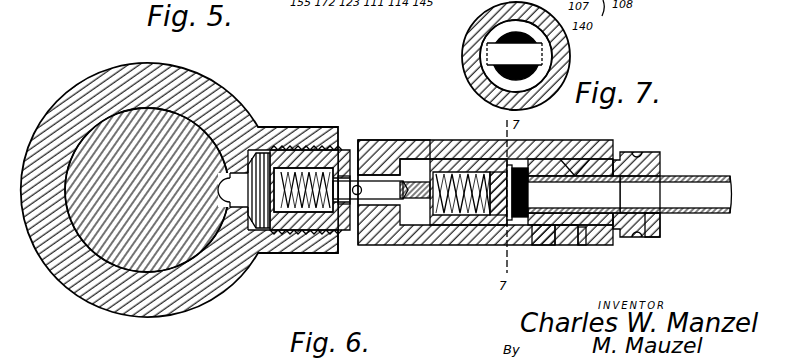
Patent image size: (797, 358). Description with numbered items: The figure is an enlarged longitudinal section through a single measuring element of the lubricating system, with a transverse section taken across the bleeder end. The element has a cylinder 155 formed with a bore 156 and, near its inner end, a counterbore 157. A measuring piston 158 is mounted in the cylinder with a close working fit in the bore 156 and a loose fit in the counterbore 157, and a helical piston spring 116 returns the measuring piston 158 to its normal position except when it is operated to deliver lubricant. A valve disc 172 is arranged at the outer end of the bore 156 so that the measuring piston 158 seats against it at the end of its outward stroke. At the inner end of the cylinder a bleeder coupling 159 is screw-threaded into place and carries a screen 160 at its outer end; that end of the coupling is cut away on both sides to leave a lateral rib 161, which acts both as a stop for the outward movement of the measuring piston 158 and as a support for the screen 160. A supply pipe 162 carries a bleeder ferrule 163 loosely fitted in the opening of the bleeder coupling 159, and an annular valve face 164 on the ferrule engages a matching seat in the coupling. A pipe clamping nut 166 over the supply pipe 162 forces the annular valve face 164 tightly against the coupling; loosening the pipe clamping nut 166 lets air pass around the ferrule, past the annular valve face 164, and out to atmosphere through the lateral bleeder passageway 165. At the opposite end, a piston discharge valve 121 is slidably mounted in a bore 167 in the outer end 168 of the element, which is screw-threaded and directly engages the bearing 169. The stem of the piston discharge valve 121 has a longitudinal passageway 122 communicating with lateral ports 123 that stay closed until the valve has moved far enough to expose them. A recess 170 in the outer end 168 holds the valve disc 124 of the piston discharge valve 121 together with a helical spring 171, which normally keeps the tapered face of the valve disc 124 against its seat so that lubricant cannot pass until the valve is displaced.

In FIG. 6, the helical piston spring 116 is at (455, 150).
In FIG. 6, the piston discharge valve 121 is at (348, 182).
In FIG. 6, the longitudinal passageway 122 is at (372, 185).
In FIG. 6, the lateral ports 123 is at (362, 198).
In FIG. 6, the valve disc 124 is at (330, 232).
In FIG. 6, the cylinder 155 is at (407, 157).
In FIG. 7, the cylinder 155 is at (484, 30).
In FIG. 6, the bore 156 is at (434, 172).
In FIG. 6, the counterbore 157 is at (492, 160).
In FIG. 6, the measuring piston 158 is at (520, 160).
In FIG. 6, the bleeder coupling 159 is at (582, 165).
In FIG. 7, the bleeder coupling 159 is at (487, 87).
In FIG. 6, the screen 160 is at (503, 233).
In FIG. 7, the screen 160 is at (495, 73).
In FIG. 6, the lateral rib 161 is at (530, 193).
In FIG. 7, the lateral rib 161 is at (490, 54).
In FIG. 6, the supply pipe 162 is at (700, 187).
In FIG. 6, the bleeder ferrule 163 is at (614, 147).
In FIG. 6, the annular valve face 164 is at (557, 232).
In FIG. 6, the lateral bleeder passageway 165 is at (582, 243).
In FIG. 6, the pipe clamping nut 166 is at (658, 224).
In FIG. 6, the bore 167 is at (349, 238).
In FIG. 6, the outer end 168 is at (302, 168).
In FIG. 6, the bearing 169 is at (236, 112).
In FIG. 6, the recess 170 is at (318, 172).
In FIG. 6, the helical spring 171 is at (300, 210).
In FIG. 6, the valve disc 172 is at (377, 217).